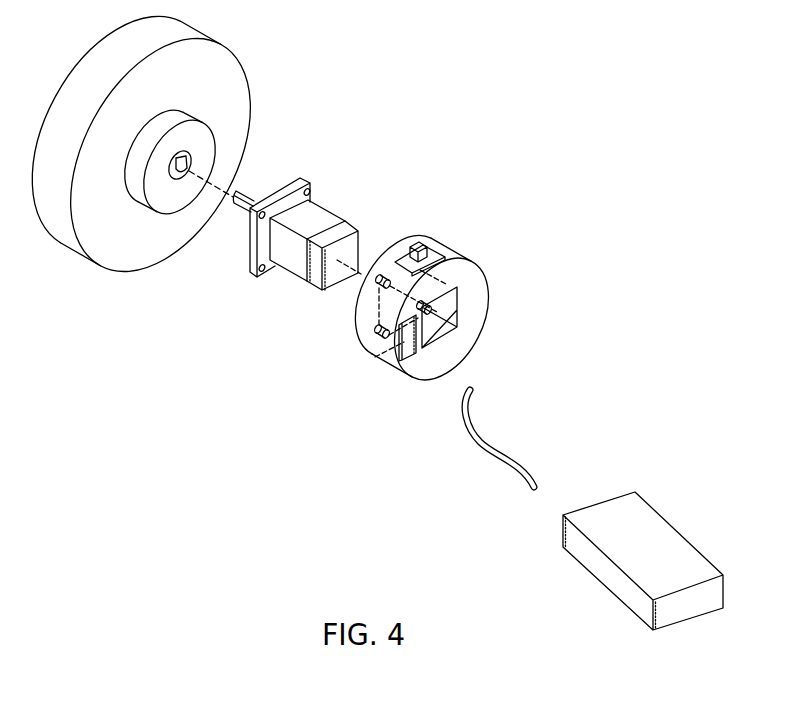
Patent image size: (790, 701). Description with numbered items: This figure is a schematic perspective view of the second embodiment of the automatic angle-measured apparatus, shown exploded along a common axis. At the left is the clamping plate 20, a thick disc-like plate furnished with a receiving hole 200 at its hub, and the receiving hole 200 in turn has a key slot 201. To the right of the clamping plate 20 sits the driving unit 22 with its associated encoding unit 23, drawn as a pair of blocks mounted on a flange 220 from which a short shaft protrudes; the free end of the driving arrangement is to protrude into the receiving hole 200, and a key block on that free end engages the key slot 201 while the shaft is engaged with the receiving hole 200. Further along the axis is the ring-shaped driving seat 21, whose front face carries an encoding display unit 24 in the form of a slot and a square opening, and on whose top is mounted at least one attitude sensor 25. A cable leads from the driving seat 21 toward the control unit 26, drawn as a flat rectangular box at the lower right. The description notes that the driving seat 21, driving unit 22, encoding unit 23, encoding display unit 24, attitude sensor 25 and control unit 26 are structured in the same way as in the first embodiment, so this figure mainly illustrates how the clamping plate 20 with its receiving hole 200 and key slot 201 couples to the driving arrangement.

The clamping plate 20 is at (215, 55).
The receiving hole 200 is at (179, 175).
The key slot 201 is at (186, 168).
The mounting flange of motor 220 is at (255, 205).
The driving unit 22 is at (316, 217).
The encoding unit 23 is at (340, 231).
The driving seat 21 is at (482, 278).
The attitude sensor 25 is at (424, 248).
The encoding display unit 24 is at (408, 350).
The control unit 26 is at (658, 547).